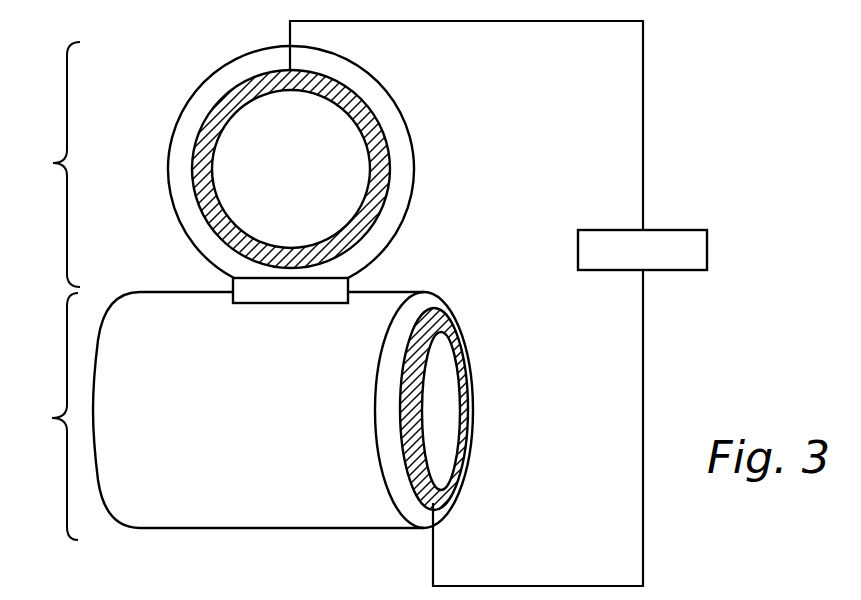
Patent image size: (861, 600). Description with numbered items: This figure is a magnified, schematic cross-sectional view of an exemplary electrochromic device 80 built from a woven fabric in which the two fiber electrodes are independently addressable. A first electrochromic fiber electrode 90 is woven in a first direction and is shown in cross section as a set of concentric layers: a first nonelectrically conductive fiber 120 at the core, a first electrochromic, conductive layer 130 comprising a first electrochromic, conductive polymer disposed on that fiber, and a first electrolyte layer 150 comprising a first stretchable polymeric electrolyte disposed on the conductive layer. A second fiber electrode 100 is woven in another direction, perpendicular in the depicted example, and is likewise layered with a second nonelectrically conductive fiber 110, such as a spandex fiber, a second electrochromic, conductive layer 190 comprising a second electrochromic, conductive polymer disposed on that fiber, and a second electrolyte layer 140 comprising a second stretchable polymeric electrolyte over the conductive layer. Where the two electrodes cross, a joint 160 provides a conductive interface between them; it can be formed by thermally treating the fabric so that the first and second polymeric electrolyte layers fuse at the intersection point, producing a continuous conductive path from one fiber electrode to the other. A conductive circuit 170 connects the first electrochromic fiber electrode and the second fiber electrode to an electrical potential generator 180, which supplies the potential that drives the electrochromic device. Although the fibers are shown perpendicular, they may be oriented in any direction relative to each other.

The electrochromic device 80 is at (739, 81).
The first electrochromic fiber electrode 90 is at (51, 164).
The second fiber electrode 100 is at (45, 416).
The second nonelectrically conductive fiber 110 is at (436, 421).
The first nonelectrically conductive fiber 120 is at (322, 172).
The first electrochromic, conductive layer 130 is at (197, 137).
The second electrolyte layer 140 is at (433, 303).
The first electrolyte layer 150 is at (253, 67).
The joint 160 is at (268, 295).
The conductive circuit 170 is at (602, 22).
The electrical potential generator 180 is at (678, 230).
The second electrochromic, conductive layer 190 is at (410, 388).